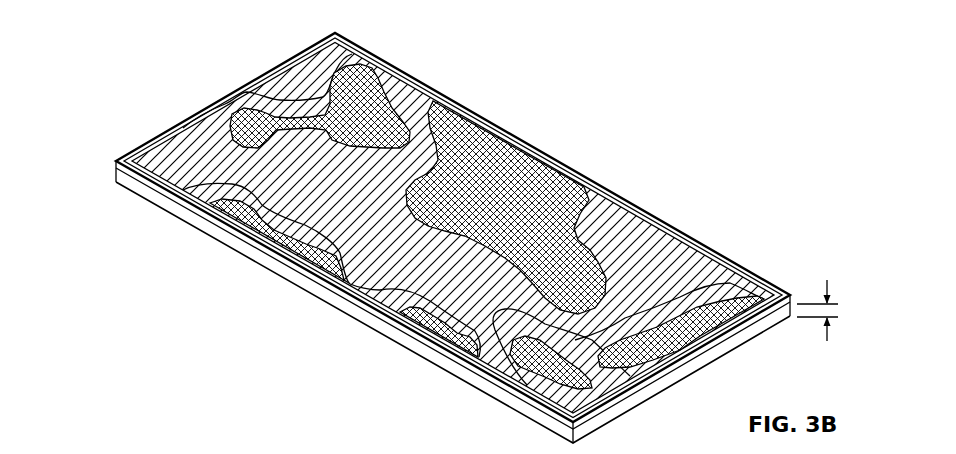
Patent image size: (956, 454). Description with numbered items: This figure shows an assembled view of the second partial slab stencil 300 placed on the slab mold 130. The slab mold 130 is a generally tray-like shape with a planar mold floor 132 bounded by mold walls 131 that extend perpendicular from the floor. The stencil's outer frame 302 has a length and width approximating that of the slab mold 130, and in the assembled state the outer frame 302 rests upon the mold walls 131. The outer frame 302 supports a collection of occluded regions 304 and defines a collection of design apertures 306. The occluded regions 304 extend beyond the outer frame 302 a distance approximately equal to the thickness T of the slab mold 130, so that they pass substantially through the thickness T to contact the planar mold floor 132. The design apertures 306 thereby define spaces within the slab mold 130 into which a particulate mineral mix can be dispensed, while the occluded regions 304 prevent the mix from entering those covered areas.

The slab mold 130 is at (108, 163).
The mold walls 131 is at (219, 232).
The planar mold floor 132 is at (174, 166).
The second partial slab stencil 300 is at (159, 100).
The outer frame 302 is at (180, 188).
The occluded regions 304 is at (352, 47).
The design apertures 306 is at (233, 118).
The thickness of the slab mold T is at (824, 284).